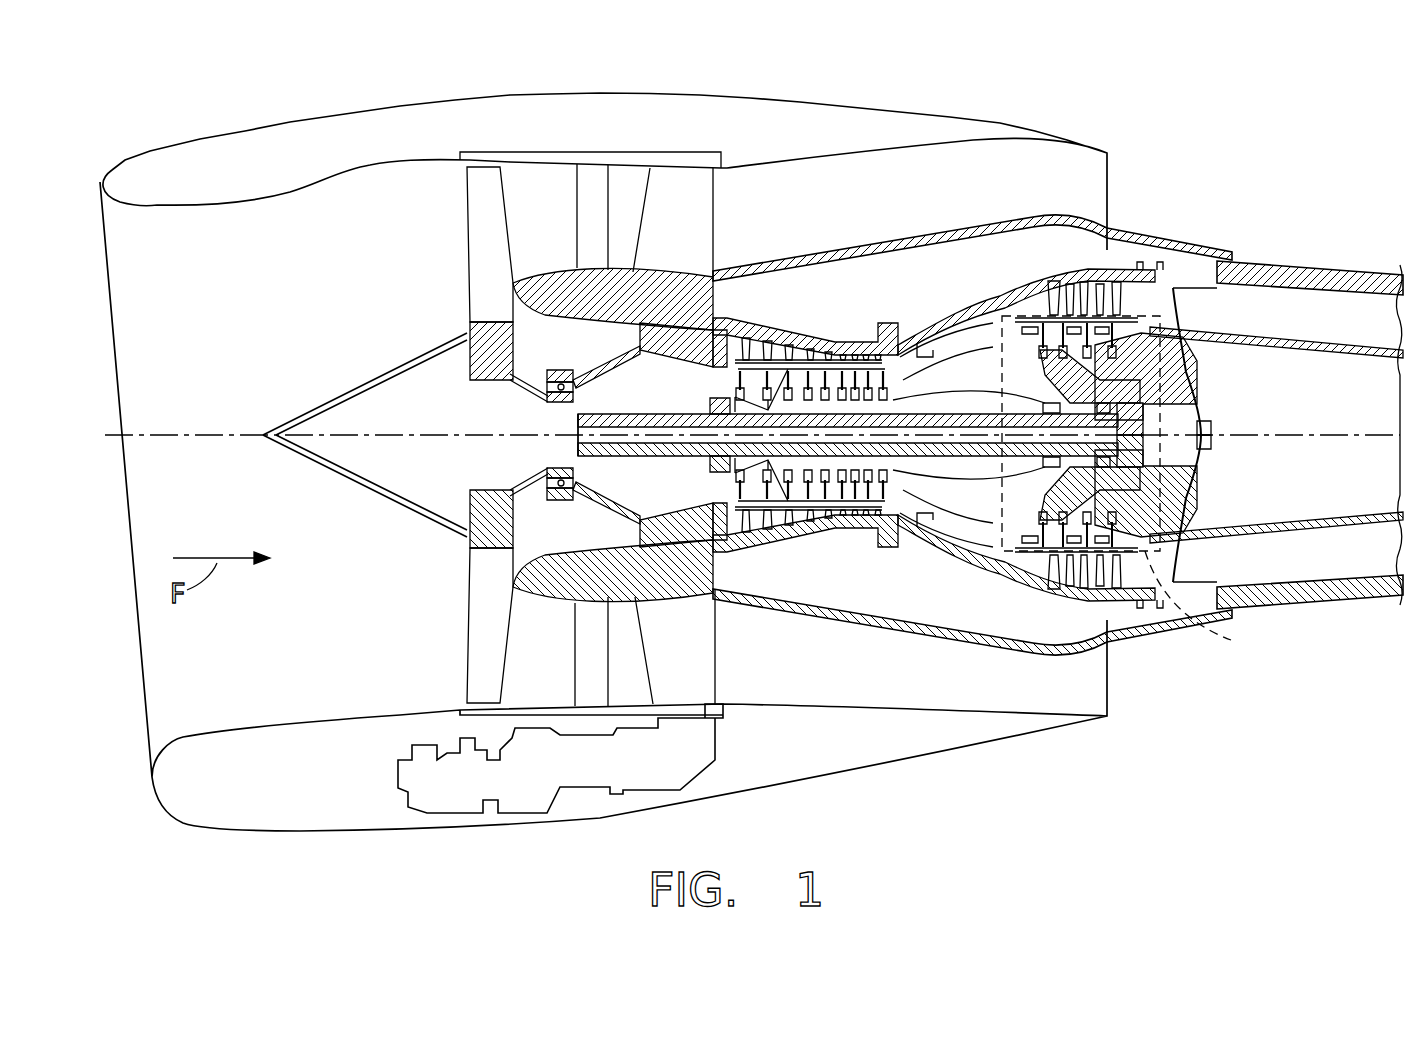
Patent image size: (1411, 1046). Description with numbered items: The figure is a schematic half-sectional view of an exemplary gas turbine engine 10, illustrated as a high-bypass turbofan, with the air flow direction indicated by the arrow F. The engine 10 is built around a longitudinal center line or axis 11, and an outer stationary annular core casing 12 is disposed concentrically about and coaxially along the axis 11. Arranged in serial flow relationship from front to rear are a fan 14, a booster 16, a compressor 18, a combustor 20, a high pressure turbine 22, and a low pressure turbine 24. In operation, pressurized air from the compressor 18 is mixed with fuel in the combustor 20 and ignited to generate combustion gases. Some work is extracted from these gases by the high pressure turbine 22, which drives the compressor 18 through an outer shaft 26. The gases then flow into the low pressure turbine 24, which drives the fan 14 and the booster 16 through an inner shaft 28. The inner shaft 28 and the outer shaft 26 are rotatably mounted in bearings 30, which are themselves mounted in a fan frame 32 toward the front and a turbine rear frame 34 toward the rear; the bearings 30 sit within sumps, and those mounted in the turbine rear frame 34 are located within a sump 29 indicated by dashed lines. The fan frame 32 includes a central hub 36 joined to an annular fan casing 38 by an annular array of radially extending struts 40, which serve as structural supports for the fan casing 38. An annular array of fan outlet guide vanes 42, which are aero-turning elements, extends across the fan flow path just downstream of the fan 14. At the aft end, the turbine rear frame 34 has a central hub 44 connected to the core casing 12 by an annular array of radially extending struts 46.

The gas turbine engine 10 is at (901, 68).
The longitudinal center line or axis 11 is at (143, 428).
The outer stationary annular core casing 12 is at (930, 343).
The fan 14 is at (460, 605).
The booster 16 is at (570, 608).
The compressor 18 is at (822, 528).
The combustor 20 is at (942, 547).
The high pressure turbine 22 is at (985, 575).
The low pressure turbine 24 is at (1080, 600).
The outer shaft 26 is at (977, 383).
The inner shaft 28 is at (977, 450).
The sump 29 is at (1231, 640).
The bearings 30 is at (574, 476).
The fan frame 32 is at (677, 363).
The turbine rear frame 34 is at (1181, 497).
The central hub 36 is at (700, 300).
The annular fan casing 38 is at (716, 162).
The struts 40 is at (697, 232).
The fan outlet guide vanes 42 is at (593, 217).
The central hub 44 is at (1172, 392).
The struts 46 is at (1157, 309).